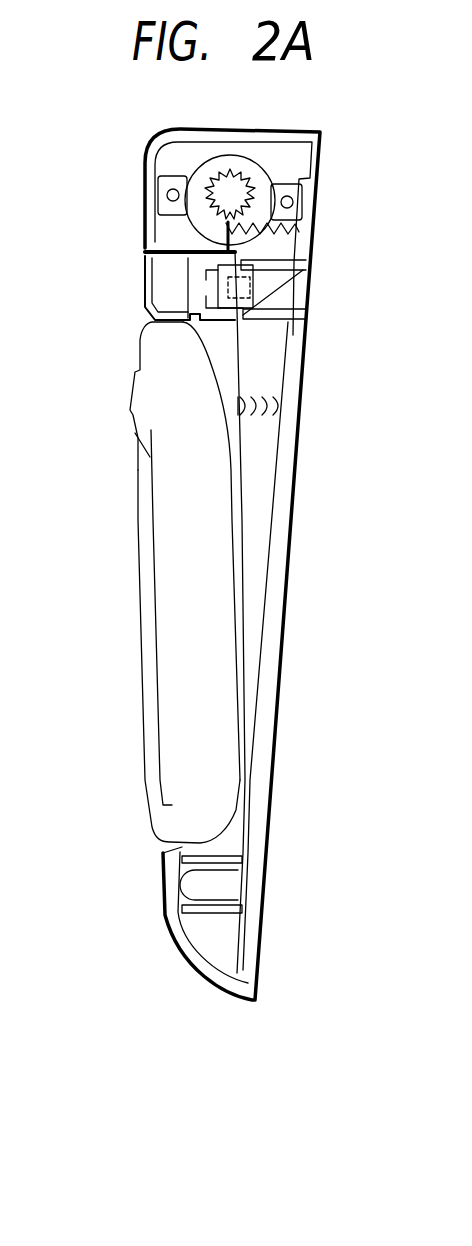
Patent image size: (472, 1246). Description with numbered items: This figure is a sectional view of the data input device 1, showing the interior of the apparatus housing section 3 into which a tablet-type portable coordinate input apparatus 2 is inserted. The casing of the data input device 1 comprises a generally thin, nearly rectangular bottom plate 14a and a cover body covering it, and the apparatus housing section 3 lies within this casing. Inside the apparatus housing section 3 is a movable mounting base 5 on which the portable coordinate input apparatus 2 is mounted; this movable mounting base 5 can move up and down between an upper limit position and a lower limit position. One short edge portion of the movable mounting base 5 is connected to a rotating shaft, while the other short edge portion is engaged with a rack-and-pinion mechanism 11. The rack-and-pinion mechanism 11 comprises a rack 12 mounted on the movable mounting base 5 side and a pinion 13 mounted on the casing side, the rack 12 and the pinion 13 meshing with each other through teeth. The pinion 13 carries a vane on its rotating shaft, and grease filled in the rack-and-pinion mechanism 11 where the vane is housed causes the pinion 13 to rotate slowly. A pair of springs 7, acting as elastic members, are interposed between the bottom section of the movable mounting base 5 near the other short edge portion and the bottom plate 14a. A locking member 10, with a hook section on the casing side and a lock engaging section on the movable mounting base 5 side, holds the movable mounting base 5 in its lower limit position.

The data input device 1 is at (129, 315).
The tablet-type portable coordinate input apparatus 2 is at (128, 632).
The apparatus housing section 3 is at (257, 472).
The movable mounting base 5 is at (227, 371).
The springs 7 is at (281, 405).
The locking member 10 is at (210, 286).
The rack-and-pinion mechanism 11 is at (283, 172).
The rack 12 is at (283, 247).
The pinion 13 is at (220, 188).
The bottom plate 14a is at (292, 450).